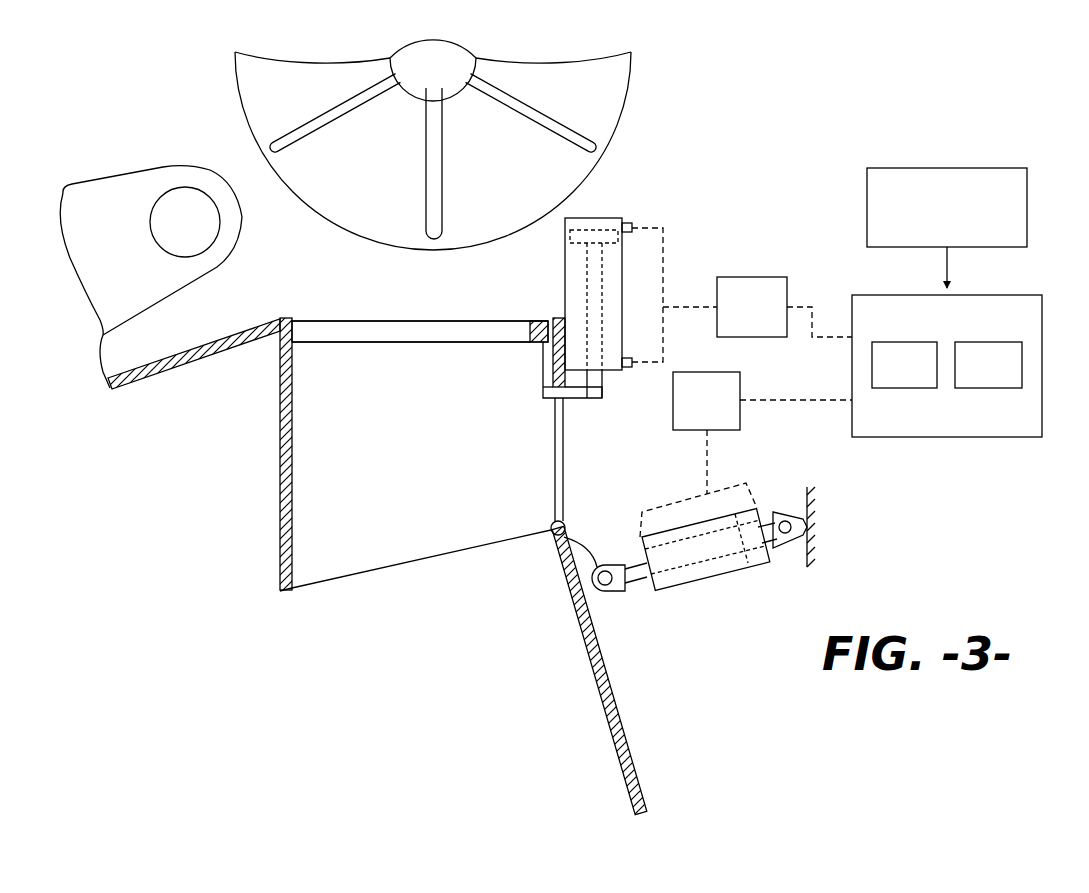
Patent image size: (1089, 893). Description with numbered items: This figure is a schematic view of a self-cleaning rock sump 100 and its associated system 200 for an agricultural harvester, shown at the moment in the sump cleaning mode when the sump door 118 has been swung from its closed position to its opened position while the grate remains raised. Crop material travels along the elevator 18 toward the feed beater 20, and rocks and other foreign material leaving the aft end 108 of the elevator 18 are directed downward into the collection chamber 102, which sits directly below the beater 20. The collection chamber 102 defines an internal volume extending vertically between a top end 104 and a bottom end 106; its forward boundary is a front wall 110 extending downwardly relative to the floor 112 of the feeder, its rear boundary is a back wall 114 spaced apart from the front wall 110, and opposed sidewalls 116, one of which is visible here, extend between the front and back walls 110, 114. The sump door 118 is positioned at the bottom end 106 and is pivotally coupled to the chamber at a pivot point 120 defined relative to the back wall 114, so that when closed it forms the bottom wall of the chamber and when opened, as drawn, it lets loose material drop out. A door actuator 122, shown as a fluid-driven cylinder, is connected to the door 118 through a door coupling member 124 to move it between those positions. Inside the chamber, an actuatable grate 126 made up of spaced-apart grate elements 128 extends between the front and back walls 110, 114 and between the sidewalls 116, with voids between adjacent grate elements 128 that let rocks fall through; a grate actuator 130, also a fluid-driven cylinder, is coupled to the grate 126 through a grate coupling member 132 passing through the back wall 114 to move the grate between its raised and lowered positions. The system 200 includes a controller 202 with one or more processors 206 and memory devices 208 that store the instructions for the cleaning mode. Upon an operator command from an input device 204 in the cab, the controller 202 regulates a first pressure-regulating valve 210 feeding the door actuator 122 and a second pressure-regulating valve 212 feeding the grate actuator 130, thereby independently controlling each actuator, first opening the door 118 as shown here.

The elevator 18 is at (112, 177).
The feed beater 20 is at (233, 88).
The rock sump 100 is at (252, 404).
The collection chamber 102 is at (387, 453).
The top end 104 is at (356, 303).
The bottom end 106 is at (361, 592).
The aft end 108 is at (227, 180).
The front wall 110 is at (278, 455).
The floor 112 is at (232, 337).
The back wall 114 is at (567, 432).
The sidewall 116 is at (437, 533).
The sump door 118 is at (598, 678).
The pivot point 120 is at (568, 532).
The door actuator 122 is at (715, 575).
The door coupling member 124 is at (598, 598).
The actuatable grate 126 is at (430, 322).
The grate elements 128 is at (410, 338).
The grate actuator 130 is at (595, 218).
The bracket 132 is at (583, 400).
The system 200 is at (788, 158).
The controller 202 is at (964, 347).
The input device 204 is at (987, 168).
The processor 206 is at (924, 377).
The memory device 208 is at (1007, 377).
The first pressure-regulating valve 210 is at (726, 412).
The second pressure-regulating valve 212 is at (771, 319).